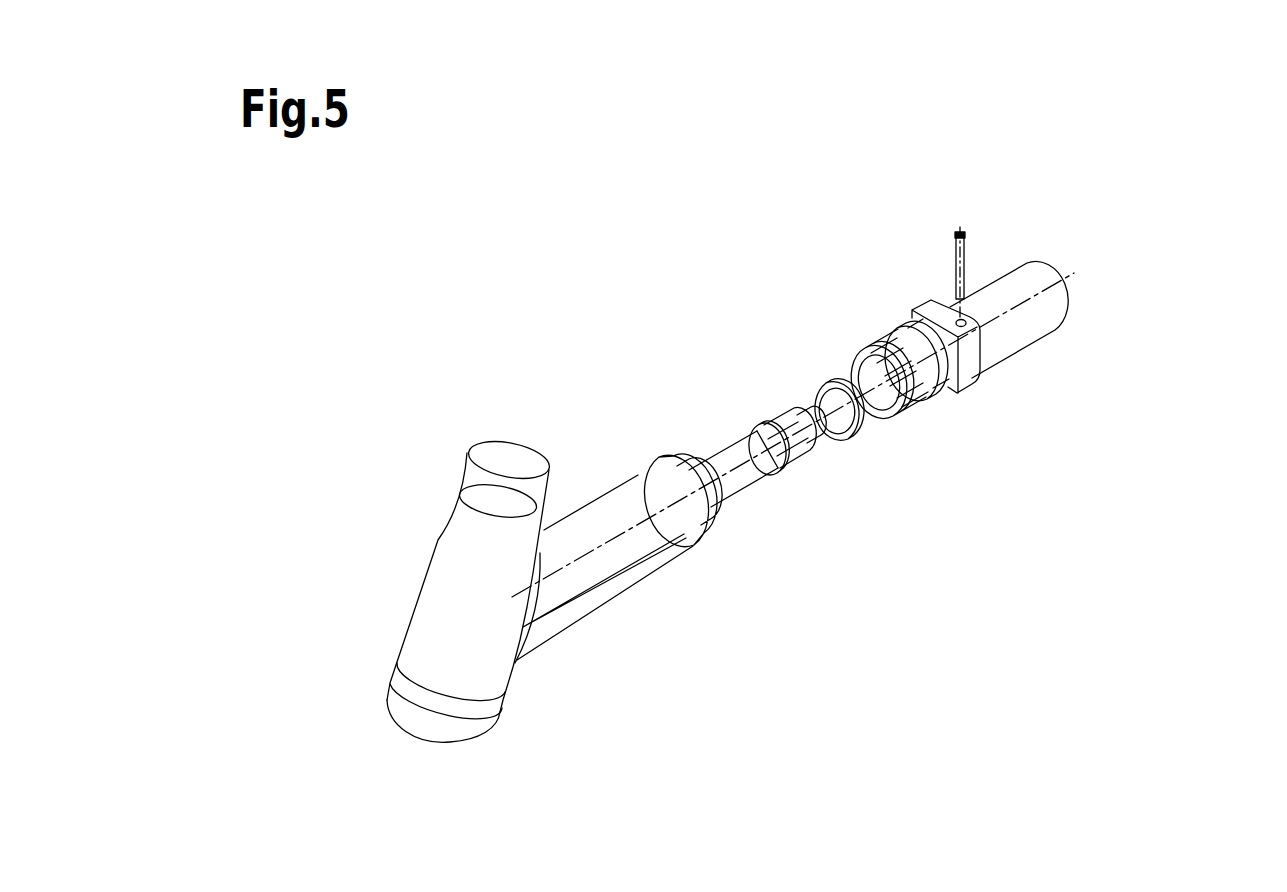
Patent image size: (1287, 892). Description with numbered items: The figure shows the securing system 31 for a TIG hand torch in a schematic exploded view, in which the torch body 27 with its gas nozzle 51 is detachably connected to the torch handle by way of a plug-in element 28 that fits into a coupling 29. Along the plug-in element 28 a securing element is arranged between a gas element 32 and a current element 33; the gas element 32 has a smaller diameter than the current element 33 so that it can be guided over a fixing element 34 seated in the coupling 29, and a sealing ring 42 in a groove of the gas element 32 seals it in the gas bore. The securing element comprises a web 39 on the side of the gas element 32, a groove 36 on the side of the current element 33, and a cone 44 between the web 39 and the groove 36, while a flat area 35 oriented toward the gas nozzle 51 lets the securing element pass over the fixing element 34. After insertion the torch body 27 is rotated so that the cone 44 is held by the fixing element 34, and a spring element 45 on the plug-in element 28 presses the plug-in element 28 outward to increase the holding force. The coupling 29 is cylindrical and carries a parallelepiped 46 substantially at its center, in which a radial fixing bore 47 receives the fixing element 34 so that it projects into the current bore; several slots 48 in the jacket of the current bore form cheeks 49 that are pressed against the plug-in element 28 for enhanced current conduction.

The torch body 27 is at (710, 650).
The plug-in element 28 is at (725, 373).
The coupling 29 is at (1137, 405).
The securing system 31 is at (957, 597).
The gas element 32 is at (805, 445).
The current element 33 is at (730, 458).
The fixing element 34 is at (965, 247).
The flat area 35 is at (775, 420).
The groove 36 is at (743, 420).
The web 39 is at (791, 455).
The sealing ring 42 is at (815, 437).
The cone 44 is at (786, 458).
The spring element 45 is at (832, 393).
The parallelepiped 46 is at (968, 372).
The fixing bore 47 is at (952, 303).
The slots 48 is at (926, 340).
The cheeks 49 is at (880, 343).
The gas nozzle 51 is at (470, 468).